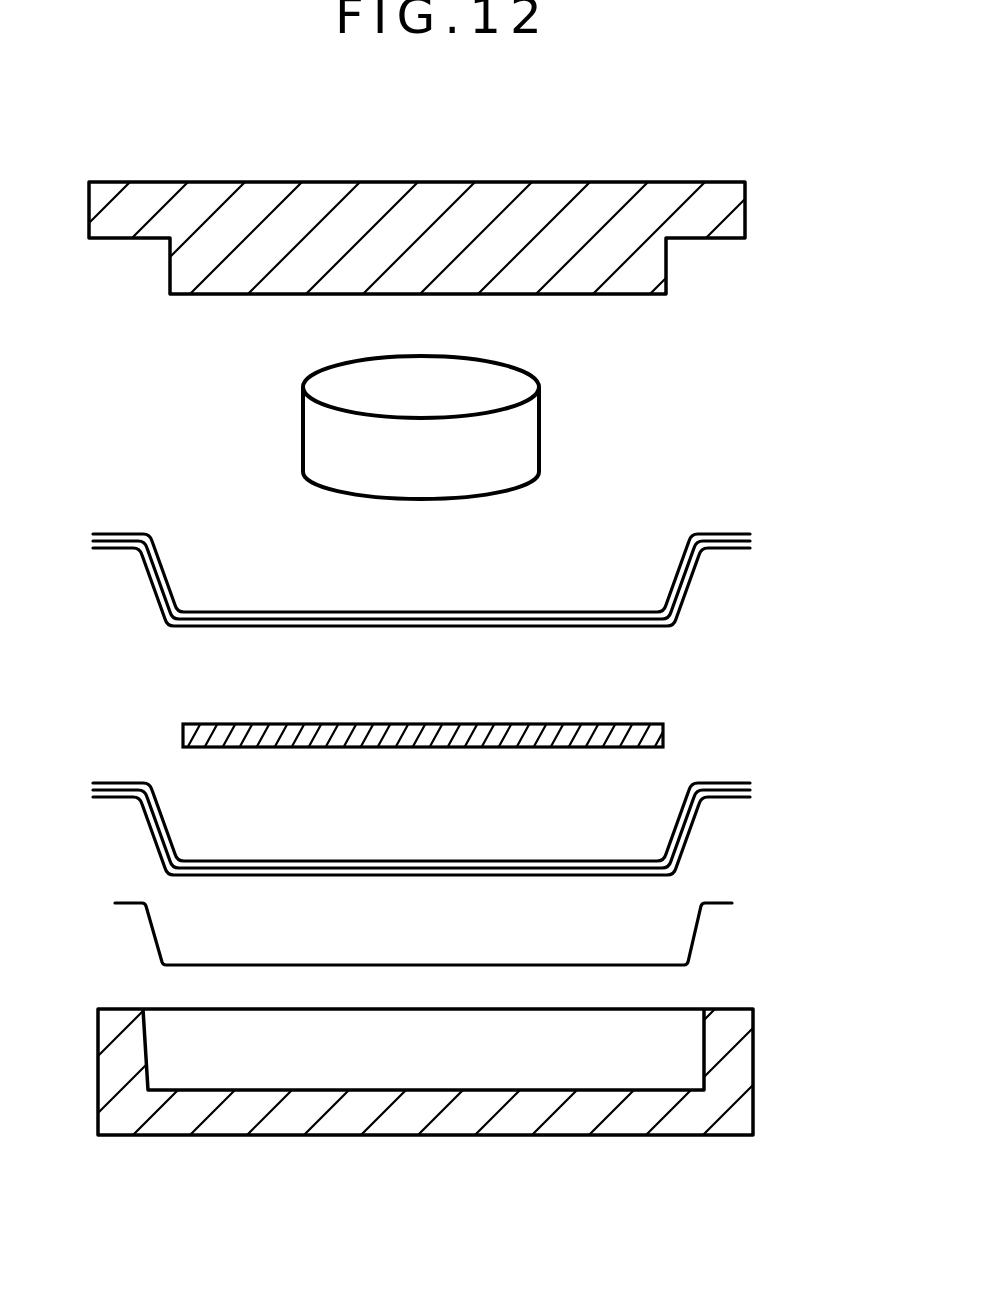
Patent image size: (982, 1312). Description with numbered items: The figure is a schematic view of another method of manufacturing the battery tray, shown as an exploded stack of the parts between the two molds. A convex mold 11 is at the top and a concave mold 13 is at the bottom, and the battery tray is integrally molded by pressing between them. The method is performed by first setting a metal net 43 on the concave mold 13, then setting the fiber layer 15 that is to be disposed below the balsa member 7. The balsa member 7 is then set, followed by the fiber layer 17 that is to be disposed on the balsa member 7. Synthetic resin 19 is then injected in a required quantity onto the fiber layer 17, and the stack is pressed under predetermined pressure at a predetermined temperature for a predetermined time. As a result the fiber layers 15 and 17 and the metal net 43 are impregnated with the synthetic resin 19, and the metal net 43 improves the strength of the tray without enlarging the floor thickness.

The convex mold 11 is at (735, 213).
The synthetic resin 19 is at (525, 437).
The fiber layer 17 is at (692, 578).
The balsa member 7 is at (663, 728).
The fiber layer 15 is at (693, 823).
The metal net 43 is at (690, 933).
The concave mold 13 is at (740, 1075).